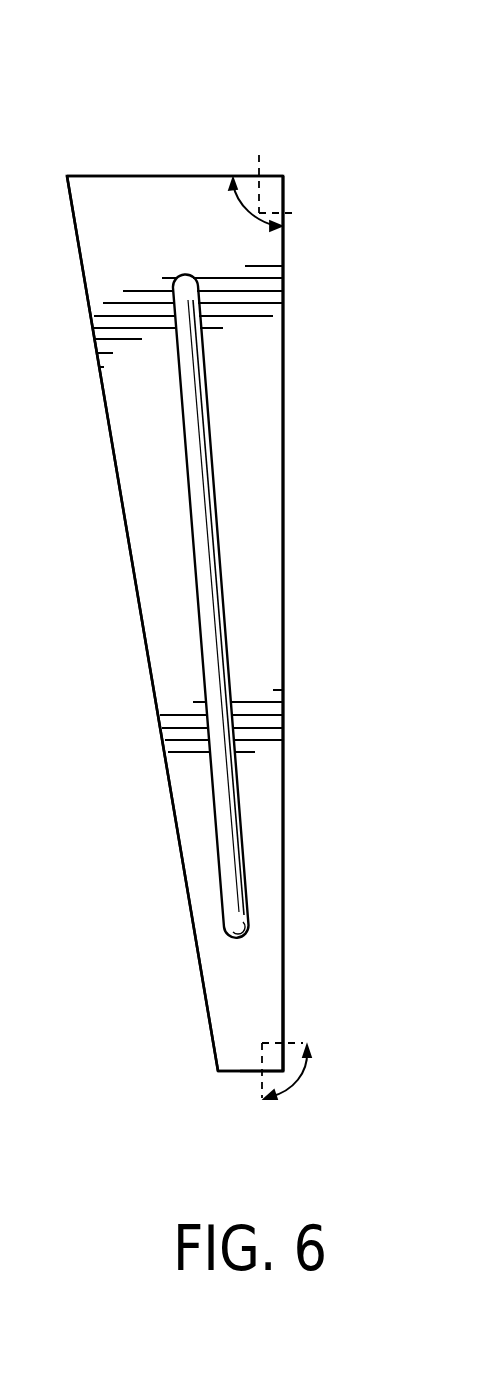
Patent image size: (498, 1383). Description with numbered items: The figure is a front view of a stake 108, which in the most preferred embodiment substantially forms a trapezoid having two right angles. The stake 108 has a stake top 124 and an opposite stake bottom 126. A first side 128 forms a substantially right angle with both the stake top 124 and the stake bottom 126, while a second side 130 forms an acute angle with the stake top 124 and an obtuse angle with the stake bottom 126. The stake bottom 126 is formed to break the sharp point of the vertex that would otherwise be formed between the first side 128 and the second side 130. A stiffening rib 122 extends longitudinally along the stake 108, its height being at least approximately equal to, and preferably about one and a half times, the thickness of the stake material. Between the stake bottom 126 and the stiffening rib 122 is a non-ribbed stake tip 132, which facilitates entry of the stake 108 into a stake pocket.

The stake 108 is at (238, 523).
The stiffening rib 122 is at (210, 422).
The stake top 124 is at (160, 176).
The stake bottom 126 is at (236, 1073).
The first side 128 is at (284, 632).
The second side 130 is at (122, 520).
The non-ribbed stake tip 132 is at (263, 1003).